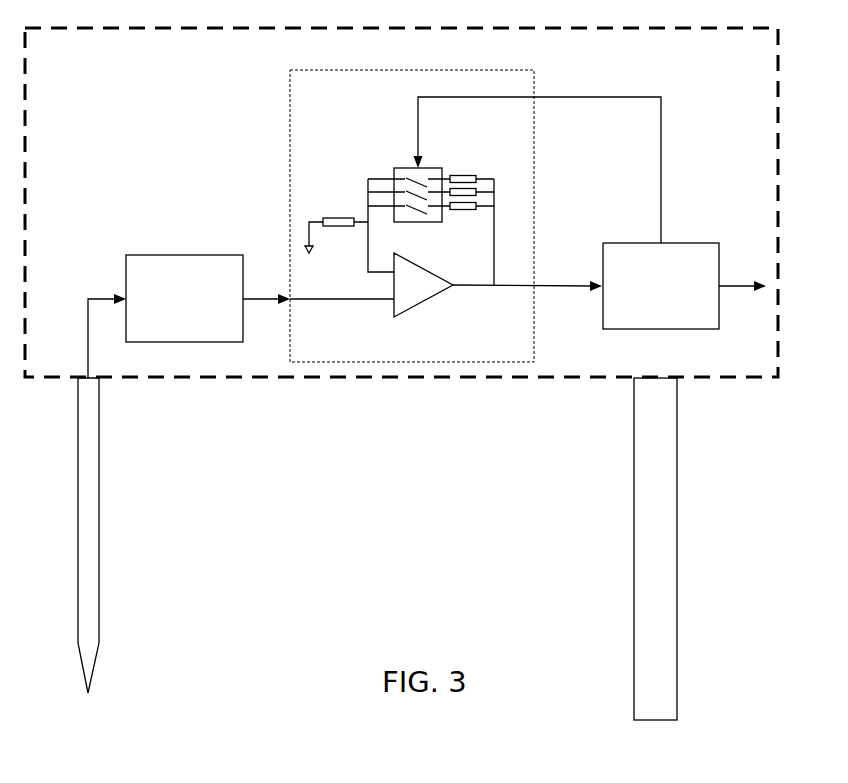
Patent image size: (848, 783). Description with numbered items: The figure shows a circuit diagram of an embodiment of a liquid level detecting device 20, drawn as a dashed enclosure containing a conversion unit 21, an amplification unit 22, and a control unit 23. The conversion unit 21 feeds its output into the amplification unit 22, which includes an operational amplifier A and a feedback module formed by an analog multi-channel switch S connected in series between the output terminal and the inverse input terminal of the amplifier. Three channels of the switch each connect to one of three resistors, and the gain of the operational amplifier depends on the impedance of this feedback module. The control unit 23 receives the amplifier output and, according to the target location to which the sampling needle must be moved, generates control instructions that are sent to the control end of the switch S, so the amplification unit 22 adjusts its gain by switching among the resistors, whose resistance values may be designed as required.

The liquid level detecting device 20 is at (305, 385).
The conversion unit 21 is at (177, 355).
The amplification unit 22 is at (396, 372).
The control unit 23 is at (687, 345).